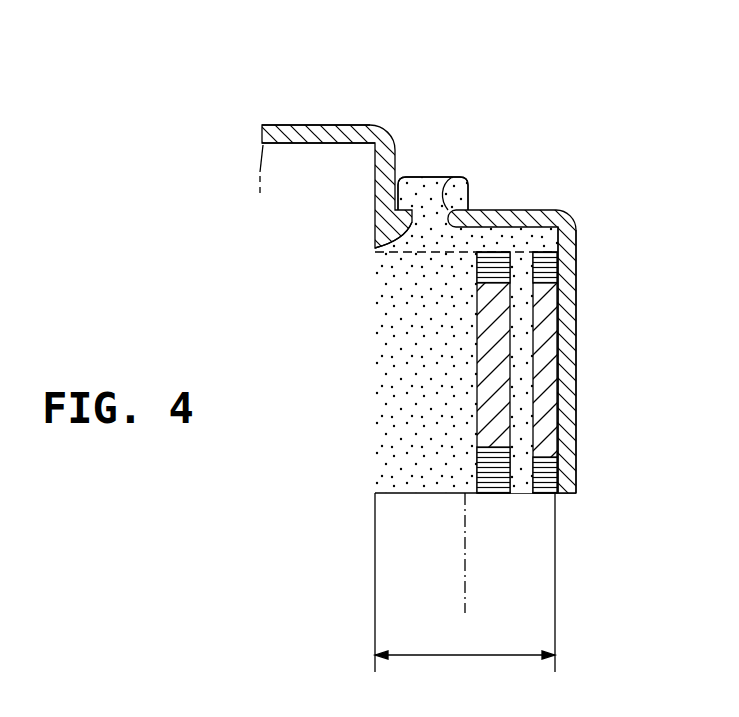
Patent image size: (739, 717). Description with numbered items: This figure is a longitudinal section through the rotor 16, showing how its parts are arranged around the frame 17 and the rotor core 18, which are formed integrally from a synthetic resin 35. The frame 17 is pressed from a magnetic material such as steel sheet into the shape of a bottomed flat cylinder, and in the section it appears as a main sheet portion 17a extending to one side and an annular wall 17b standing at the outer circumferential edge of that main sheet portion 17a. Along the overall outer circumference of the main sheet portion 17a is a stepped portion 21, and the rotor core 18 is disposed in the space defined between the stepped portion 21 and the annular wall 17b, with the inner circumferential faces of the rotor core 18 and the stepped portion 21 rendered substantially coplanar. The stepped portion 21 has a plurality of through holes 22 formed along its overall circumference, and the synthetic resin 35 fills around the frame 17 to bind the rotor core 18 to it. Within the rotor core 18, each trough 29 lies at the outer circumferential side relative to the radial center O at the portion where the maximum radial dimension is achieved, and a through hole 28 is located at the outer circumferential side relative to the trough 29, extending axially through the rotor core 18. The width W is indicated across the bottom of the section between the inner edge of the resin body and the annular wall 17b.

The rotor 16 is at (410, 128).
The frame 17 is at (572, 207).
The main sheet portion 17a is at (297, 125).
The annular wall 17b is at (566, 387).
The rotor core 18 is at (488, 493).
The stepped portion 21 is at (404, 234).
The through hole 22 is at (452, 177).
The through hole 28 is at (527, 360).
The trough 29 is at (477, 437).
The synthetic resin 35 is at (407, 377).
The radial center O is at (463, 580).
The width W is at (465, 591).